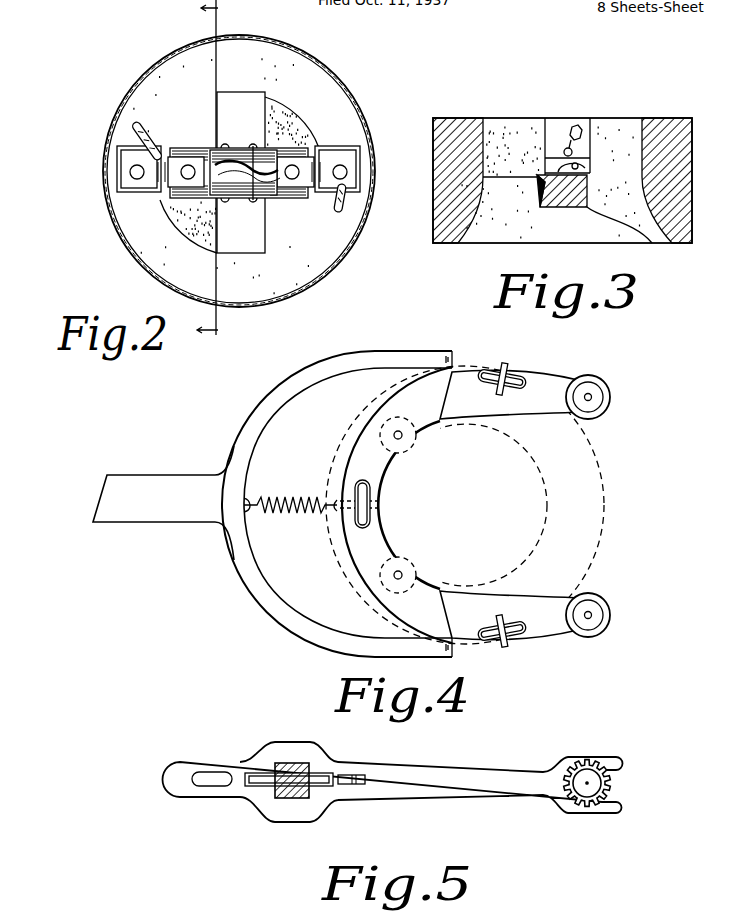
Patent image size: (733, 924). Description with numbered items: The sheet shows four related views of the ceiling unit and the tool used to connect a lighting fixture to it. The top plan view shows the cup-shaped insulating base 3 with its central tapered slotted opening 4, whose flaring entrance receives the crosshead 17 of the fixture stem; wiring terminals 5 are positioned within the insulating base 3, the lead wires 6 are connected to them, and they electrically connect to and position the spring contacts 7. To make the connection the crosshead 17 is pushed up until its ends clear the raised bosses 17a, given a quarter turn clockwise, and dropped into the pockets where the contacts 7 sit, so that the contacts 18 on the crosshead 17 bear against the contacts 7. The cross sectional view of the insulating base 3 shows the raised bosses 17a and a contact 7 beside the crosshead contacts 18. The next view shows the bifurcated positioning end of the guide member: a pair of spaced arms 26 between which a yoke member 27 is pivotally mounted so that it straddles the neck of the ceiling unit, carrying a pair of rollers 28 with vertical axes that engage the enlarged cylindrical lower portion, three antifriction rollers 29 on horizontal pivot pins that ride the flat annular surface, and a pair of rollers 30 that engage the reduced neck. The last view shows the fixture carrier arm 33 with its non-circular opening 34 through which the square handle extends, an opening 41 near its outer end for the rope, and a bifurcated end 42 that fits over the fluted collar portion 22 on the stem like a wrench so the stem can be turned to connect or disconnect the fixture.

In FIG. 2, the insulating base 3 is at (337, 95).
In FIG. 2, the tapered slotted opening 4 is at (248, 105).
In FIG. 2, the wiring terminals 5 is at (367, 172).
In FIG. 2, the lead wires 6 is at (143, 135).
In FIG. 2, the contacts 7 is at (353, 163).
In FIG. 3, the contacts 7 is at (556, 142).
In FIG. 2, the crosshead 17 is at (317, 148).
In FIG. 3, the crosshead 17 is at (652, 243).
In FIG. 2, the raised bosses 17a is at (290, 130).
In FIG. 3, the raised bosses 17a is at (508, 177).
In FIG. 2, the contacts 18 is at (305, 164).
In FIG. 3, the contacts 18 is at (540, 207).
In FIG. 4, the spaced arms 26 is at (375, 352).
In FIG. 4, the yoke member 27 is at (452, 398).
In FIG. 4, the rollers 28 is at (610, 395).
In FIG. 4, the antifriction rollers 29 is at (495, 370).
In FIG. 4, the rollers 30 is at (405, 443).
In FIG. 5, the collar portion 22 is at (613, 782).
In FIG. 5, the carrier arm 33 is at (437, 775).
In FIG. 5, the opening 34 is at (287, 763).
In FIG. 5, the opening 41 is at (203, 784).
In FIG. 5, the bifurcated end 42 is at (577, 754).